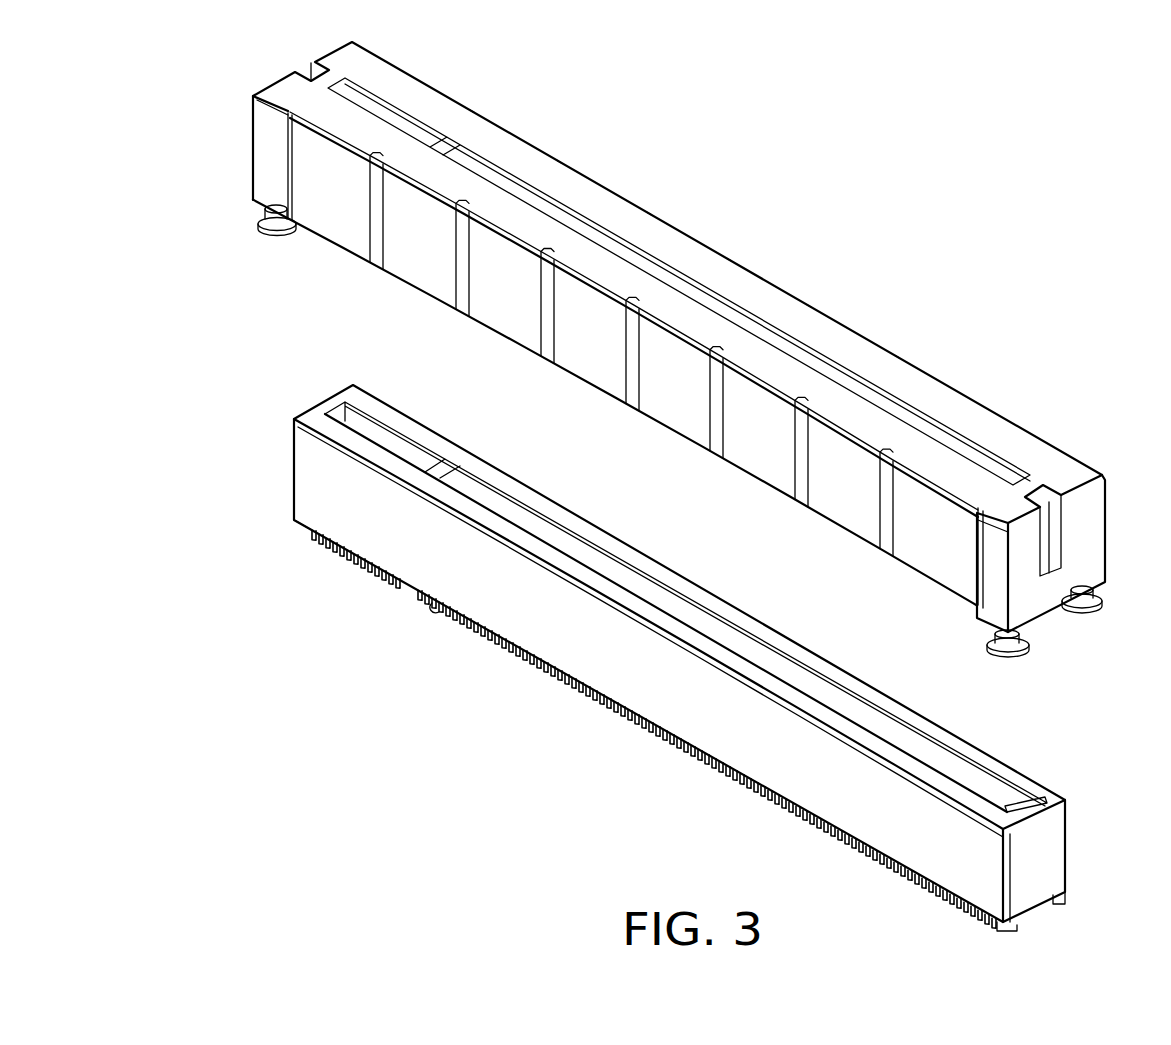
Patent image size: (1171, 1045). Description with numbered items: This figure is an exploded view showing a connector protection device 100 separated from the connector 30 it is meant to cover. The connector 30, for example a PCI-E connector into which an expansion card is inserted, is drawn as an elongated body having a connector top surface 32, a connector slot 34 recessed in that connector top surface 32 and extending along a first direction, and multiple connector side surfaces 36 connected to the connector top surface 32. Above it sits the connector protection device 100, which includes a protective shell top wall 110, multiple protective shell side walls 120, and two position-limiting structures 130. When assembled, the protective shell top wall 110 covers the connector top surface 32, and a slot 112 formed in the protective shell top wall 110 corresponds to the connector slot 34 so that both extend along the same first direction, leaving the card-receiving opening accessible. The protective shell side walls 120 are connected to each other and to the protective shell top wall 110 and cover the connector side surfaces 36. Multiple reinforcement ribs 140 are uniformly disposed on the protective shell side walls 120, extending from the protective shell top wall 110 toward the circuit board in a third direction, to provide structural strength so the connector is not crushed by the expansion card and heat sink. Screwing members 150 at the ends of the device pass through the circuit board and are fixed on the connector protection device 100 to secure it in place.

The connector protection device 100 is at (867, 227).
The protective shell top wall 110 is at (921, 390).
The slot 112 is at (614, 249).
The protective shell side walls 120 is at (270, 86).
The position-limiting structures 130 is at (313, 62).
The reinforcement ribs 140 is at (618, 366).
The screwing members 150 is at (259, 232).
The connector 30 is at (452, 678).
The connector top surface 32 is at (1012, 776).
The connector slot 34 is at (748, 651).
The connector side surfaces 36 is at (293, 471).